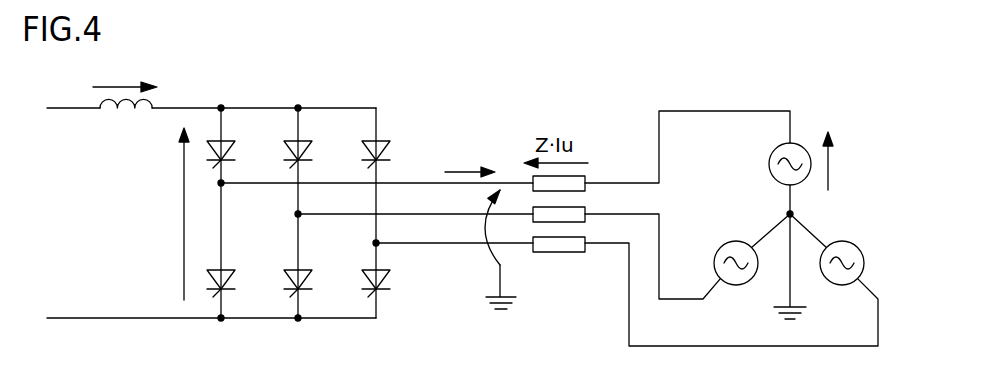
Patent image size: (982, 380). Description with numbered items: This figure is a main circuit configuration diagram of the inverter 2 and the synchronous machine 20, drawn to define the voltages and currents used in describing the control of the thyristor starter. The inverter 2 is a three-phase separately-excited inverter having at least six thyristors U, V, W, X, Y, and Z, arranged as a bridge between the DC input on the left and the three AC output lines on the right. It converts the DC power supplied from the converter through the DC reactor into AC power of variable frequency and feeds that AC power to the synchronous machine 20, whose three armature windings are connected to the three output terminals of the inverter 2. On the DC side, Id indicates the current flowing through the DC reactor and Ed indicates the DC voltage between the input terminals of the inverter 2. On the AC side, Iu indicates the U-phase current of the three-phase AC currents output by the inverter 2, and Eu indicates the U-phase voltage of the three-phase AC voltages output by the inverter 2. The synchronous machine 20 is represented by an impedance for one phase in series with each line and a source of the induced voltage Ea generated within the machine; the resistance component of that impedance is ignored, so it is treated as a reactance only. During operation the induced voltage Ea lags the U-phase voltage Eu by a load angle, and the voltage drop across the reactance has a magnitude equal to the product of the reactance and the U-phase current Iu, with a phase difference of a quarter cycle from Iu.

The inverter 2 is at (278, 83).
The synchronous machine 20 is at (860, 128).
The thyristor U is at (228, 140).
The thyristor V is at (304, 140).
The thyristor W is at (385, 140).
The thyristor X is at (227, 293).
The thyristor Y is at (304, 293).
The thyristor Z is at (382, 293).
The current flowing through DC reactor Id is at (125, 76).
The DC voltage Ed is at (169, 214).
The U-phase current Iu is at (470, 161).
The U-phase voltage Eu is at (509, 249).
The induced voltage Ea is at (843, 161).